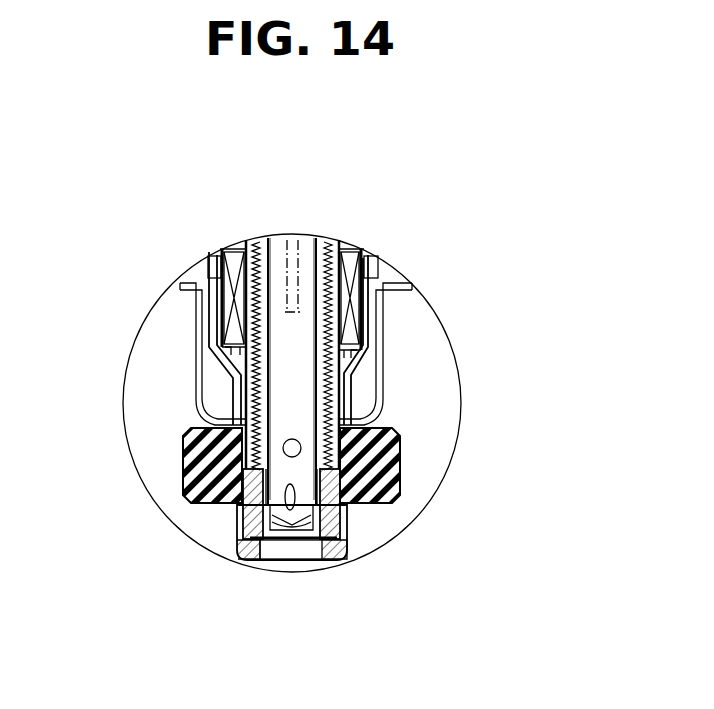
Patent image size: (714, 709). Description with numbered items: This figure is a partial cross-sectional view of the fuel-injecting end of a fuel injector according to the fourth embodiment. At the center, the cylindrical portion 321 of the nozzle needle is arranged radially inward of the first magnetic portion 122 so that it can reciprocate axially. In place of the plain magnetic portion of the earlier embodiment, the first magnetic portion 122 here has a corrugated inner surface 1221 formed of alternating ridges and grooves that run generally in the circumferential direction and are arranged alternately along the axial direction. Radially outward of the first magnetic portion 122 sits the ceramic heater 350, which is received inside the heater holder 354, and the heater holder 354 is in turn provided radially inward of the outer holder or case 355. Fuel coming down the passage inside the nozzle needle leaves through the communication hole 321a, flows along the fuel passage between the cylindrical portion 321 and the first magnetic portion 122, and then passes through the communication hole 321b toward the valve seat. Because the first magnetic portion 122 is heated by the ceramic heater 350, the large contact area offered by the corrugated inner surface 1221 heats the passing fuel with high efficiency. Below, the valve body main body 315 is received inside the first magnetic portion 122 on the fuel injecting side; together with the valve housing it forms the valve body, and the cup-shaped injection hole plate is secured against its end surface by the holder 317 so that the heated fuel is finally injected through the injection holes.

The cylindrical portion 321 is at (268, 240).
The communication hole 321a is at (301, 448).
The communication hole 321b is at (300, 493).
The ceramic heater 350 is at (350, 297).
The corrugated inner surface 1221 is at (345, 343).
The first magnetic portion 122 is at (355, 393).
The heater holder 354 is at (228, 364).
The holder 355 is at (196, 408).
The valve body main body 315 is at (240, 528).
The holder 317 is at (250, 545).